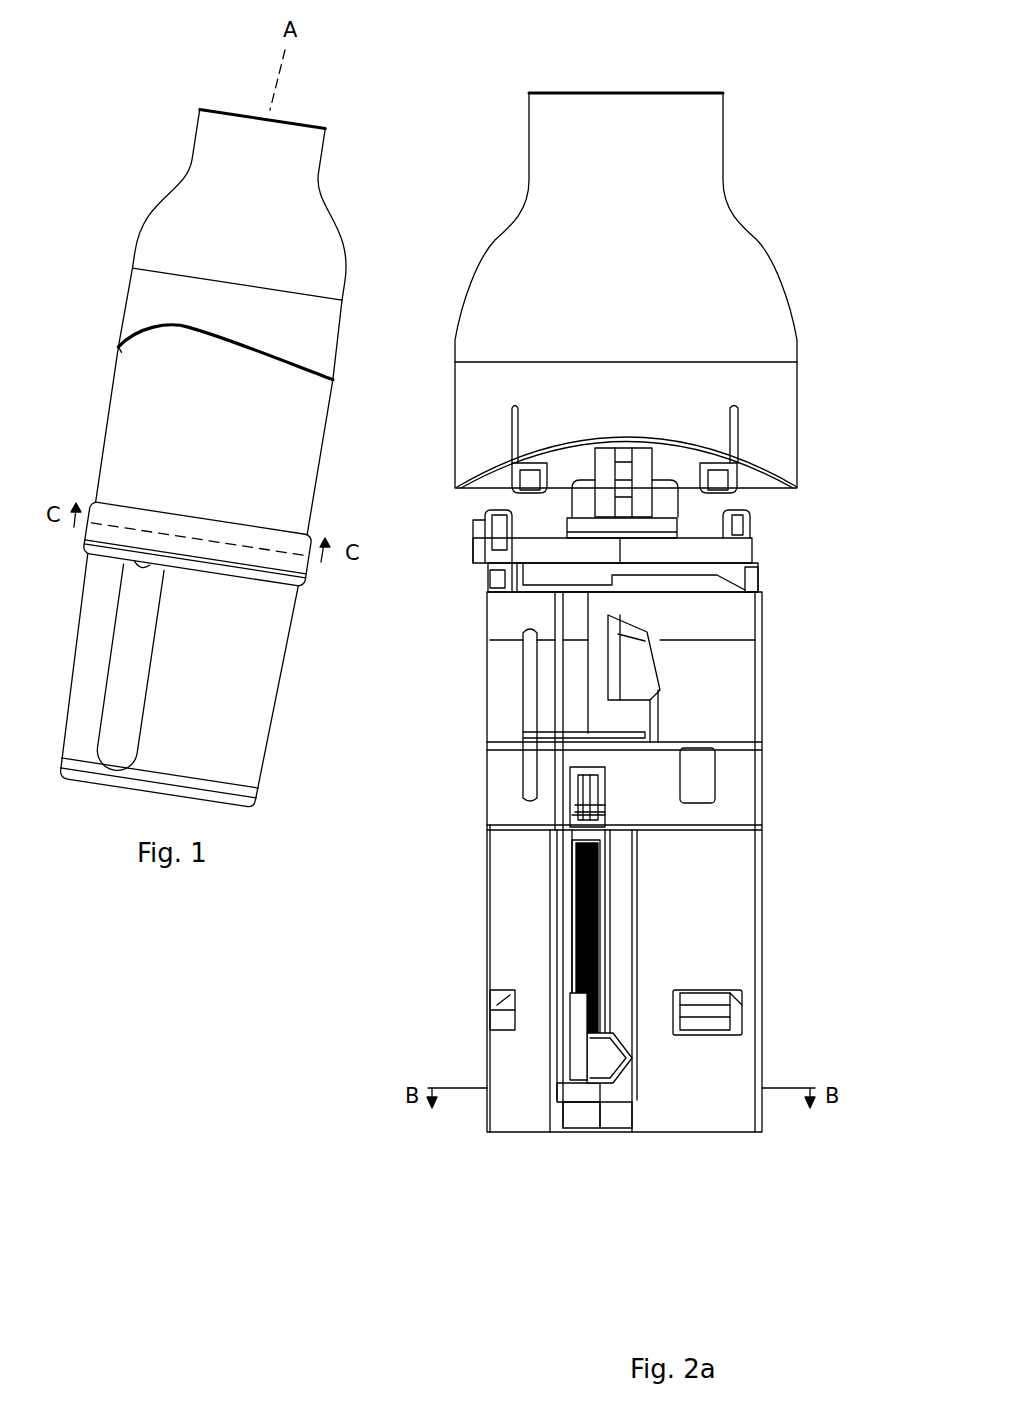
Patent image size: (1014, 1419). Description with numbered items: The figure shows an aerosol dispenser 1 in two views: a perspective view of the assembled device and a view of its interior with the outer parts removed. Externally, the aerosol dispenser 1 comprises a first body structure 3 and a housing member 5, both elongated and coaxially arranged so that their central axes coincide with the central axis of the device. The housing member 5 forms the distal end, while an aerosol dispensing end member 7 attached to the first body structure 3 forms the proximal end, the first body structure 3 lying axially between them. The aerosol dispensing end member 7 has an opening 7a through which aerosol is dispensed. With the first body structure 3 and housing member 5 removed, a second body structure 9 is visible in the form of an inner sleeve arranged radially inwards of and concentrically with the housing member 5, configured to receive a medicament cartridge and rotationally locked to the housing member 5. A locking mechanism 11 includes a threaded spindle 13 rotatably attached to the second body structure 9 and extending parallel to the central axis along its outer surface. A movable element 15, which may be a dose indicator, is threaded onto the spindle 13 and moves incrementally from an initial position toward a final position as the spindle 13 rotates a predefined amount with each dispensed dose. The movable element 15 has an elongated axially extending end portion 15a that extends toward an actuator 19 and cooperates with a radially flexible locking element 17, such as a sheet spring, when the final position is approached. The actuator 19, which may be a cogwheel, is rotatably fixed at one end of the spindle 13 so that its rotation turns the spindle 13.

In FIG. 1, the aerosol dispenser 1 is at (63, 304).
In FIG. 2A, the aerosol dispenser 1 is at (944, 222).
In FIG. 1, the first body structure 3 is at (312, 472).
In FIG. 1, the housing member 5 is at (287, 710).
In FIG. 1, the aerosol dispensing end member 7 is at (343, 262).
In FIG. 1, the opening 7a is at (297, 109).
In FIG. 2A, the second body structure 9 is at (762, 925).
In FIG. 2A, the locking mechanism 11 is at (538, 937).
In FIG. 2A, the spindle 13 is at (577, 868).
In FIG. 2A, the movable element 15 is at (580, 1070).
In FIG. 2A, the axially extending end portion 15a is at (573, 1028).
In FIG. 2A, the locking element 17 is at (632, 767).
In FIG. 2A, the actuator 19 is at (576, 790).